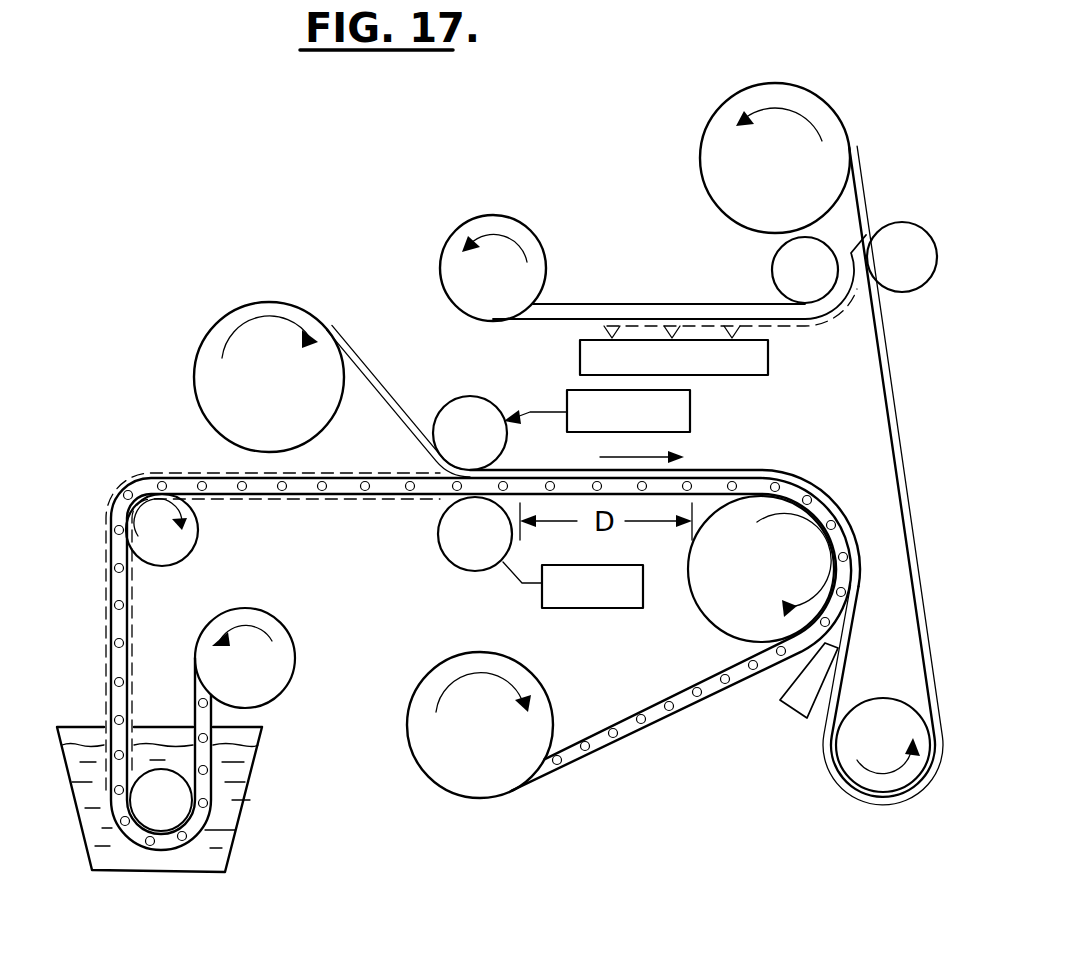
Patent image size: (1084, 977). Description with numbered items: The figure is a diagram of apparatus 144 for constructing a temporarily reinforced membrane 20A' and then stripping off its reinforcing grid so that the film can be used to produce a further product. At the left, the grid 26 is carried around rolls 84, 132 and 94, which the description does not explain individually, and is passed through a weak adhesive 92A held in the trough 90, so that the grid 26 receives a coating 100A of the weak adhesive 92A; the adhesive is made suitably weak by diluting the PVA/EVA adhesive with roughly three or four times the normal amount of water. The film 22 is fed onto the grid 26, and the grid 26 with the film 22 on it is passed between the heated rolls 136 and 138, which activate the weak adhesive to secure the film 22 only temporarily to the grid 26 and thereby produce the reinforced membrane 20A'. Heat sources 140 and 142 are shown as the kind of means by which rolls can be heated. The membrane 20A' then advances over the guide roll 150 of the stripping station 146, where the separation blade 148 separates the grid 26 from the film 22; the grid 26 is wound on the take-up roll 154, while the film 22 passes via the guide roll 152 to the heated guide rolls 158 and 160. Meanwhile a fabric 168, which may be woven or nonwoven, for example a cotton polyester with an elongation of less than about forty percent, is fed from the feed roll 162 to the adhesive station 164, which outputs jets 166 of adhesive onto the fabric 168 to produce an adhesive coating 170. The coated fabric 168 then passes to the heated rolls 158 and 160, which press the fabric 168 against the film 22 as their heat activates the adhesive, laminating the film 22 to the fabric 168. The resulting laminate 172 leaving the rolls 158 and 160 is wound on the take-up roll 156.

The grid 26 is at (210, 480).
The coating of weak adhesive 100A is at (133, 600).
The roller 132 is at (197, 528).
The roller 84 is at (263, 684).
The trough 90 is at (258, 768).
The weak adhesive 92A is at (210, 850).
The roller in tank 94 is at (170, 808).
The apparatus 144 is at (178, 387).
The film 22 is at (400, 343).
The heated roll 138 is at (461, 398).
The heated roll 136 is at (437, 551).
The heat source 142 is at (690, 412).
The heat source 140 is at (585, 611).
The guide roll 150 is at (787, 582).
The temporarily reinforced membrane 20A' is at (665, 505).
The take-up roll 154 is at (497, 741).
The stripping station 146 is at (740, 713).
The separation blade 148 is at (787, 713).
The laminate 172 is at (875, 182).
The guide roll 152 is at (895, 755).
The take-up roll 156 is at (790, 171).
The heated guide roll 160 is at (903, 293).
The heated guide roll 158 is at (772, 266).
The feed roll 162 is at (516, 290).
The fabric 168 is at (591, 302).
The coating of adhesive 170 is at (824, 330).
The jets of adhesive 166 is at (600, 330).
The adhesive station 164 is at (768, 362).